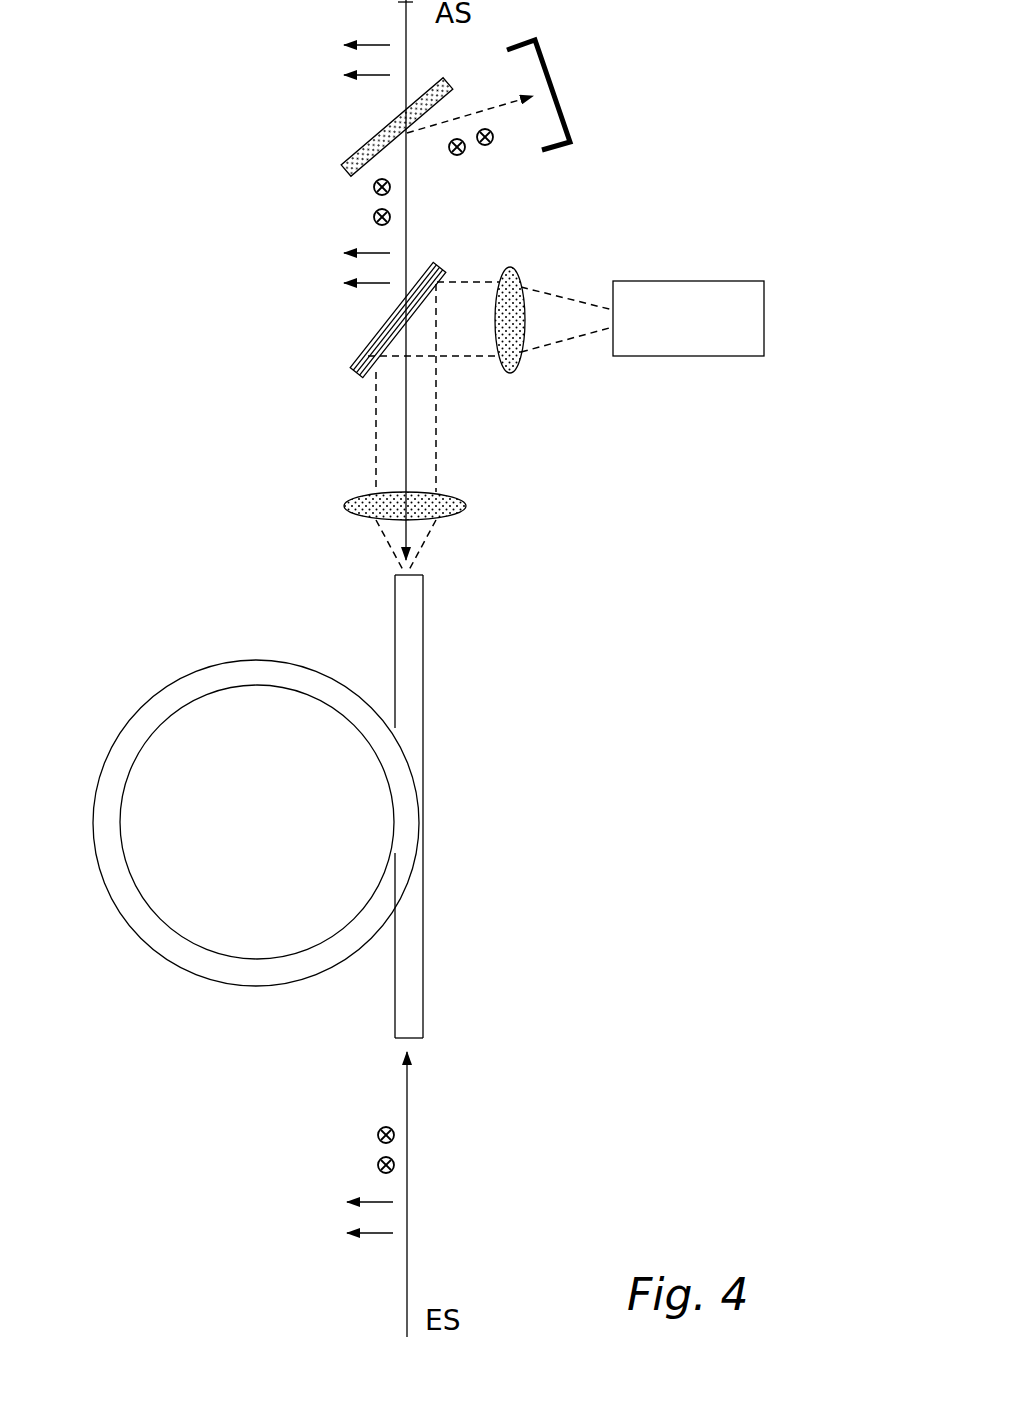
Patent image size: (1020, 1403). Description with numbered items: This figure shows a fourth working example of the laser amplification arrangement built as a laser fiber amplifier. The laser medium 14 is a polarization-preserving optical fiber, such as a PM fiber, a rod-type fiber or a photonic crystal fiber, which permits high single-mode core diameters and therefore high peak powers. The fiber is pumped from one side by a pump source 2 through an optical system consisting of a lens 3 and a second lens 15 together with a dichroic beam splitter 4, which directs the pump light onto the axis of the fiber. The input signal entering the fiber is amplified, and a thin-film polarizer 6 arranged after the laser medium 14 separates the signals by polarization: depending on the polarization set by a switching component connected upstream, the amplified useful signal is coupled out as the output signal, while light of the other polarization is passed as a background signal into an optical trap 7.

The pump source 2 is at (706, 296).
The lens 3 is at (561, 304).
The dichroic beam splitter 4 is at (344, 319).
The thin-film polarizer 6 is at (347, 127).
The optical trap 7 is at (591, 95).
The laser medium 14 is at (324, 806).
The lens 15 is at (343, 484).